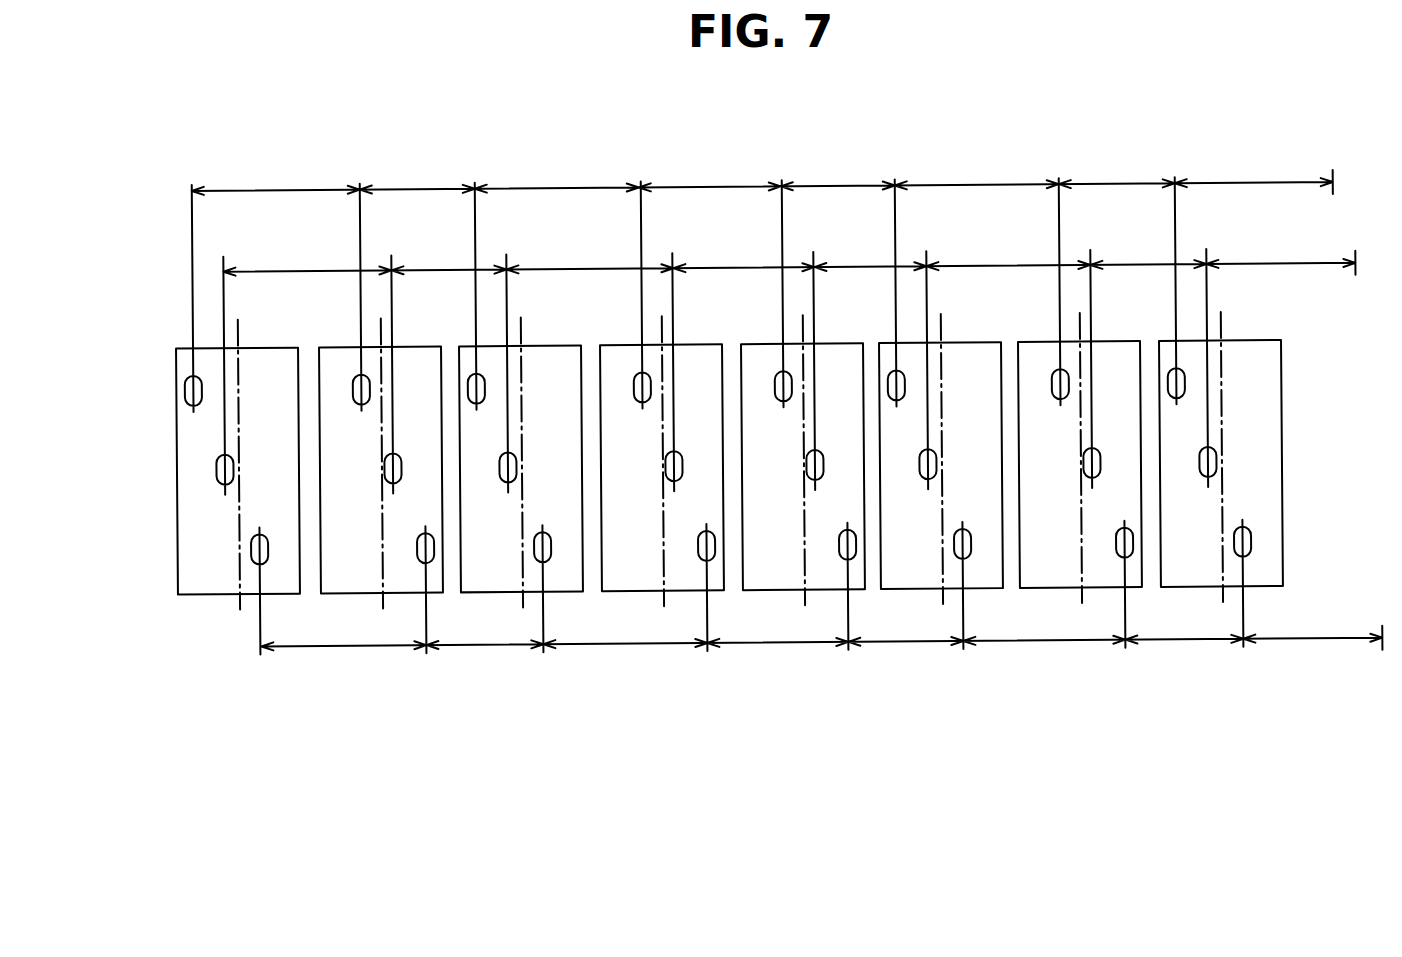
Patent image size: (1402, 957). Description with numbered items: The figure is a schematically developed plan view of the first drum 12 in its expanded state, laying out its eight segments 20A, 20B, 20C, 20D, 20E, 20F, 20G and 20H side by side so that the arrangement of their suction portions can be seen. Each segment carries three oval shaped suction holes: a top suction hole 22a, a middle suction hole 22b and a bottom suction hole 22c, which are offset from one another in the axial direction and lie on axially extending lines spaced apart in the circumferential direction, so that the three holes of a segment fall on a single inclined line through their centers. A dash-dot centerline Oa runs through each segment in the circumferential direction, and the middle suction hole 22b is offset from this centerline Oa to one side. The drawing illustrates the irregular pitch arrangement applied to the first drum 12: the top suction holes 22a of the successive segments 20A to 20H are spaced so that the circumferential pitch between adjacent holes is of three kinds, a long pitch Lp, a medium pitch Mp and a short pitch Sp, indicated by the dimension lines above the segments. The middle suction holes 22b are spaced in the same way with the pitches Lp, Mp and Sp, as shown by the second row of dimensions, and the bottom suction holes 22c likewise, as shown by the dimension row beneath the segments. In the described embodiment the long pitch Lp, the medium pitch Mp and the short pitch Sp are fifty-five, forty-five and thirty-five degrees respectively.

The first drum 12 is at (168, 625).
The segment 20A is at (184, 352).
The segment 20B is at (344, 356).
The segment 20C is at (470, 357).
The segment 20D is at (617, 357).
The segment 20E is at (755, 357).
The segment 20F is at (976, 358).
The segment 20G is at (1122, 356).
The segment 20H is at (1277, 363).
The top oval suction hole 22a is at (185, 389).
The middle oval suction hole 22b is at (216, 466).
The bottom oval suction hole 22c is at (250, 546).
The centerline of the segment in the circumferential direction Oa is at (239, 605).
The long pitch Lp is at (763, 394).
The short pitch Sp is at (790, 394).
The medium pitch Mp is at (819, 401).